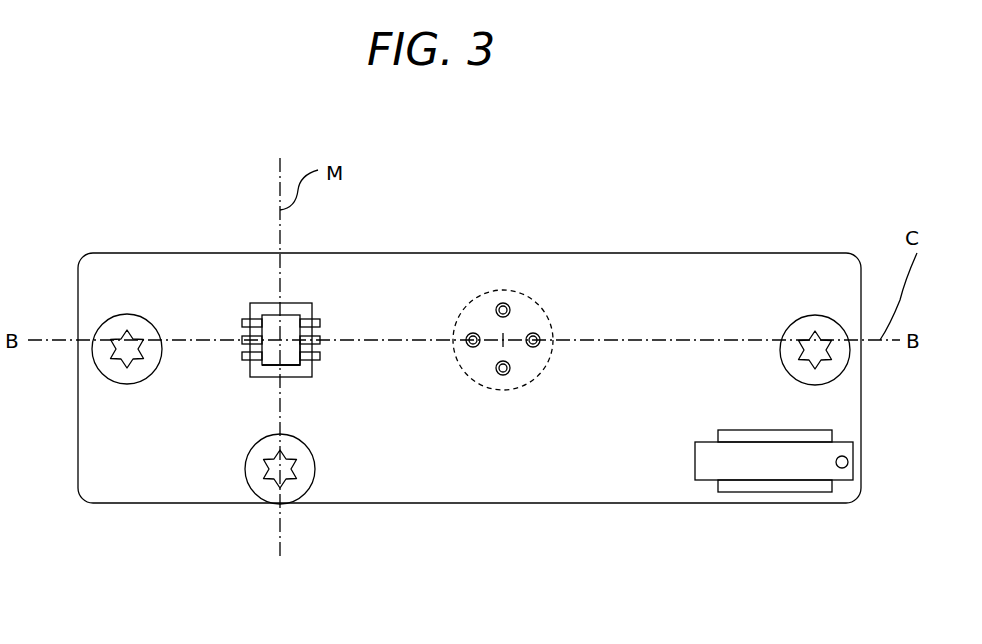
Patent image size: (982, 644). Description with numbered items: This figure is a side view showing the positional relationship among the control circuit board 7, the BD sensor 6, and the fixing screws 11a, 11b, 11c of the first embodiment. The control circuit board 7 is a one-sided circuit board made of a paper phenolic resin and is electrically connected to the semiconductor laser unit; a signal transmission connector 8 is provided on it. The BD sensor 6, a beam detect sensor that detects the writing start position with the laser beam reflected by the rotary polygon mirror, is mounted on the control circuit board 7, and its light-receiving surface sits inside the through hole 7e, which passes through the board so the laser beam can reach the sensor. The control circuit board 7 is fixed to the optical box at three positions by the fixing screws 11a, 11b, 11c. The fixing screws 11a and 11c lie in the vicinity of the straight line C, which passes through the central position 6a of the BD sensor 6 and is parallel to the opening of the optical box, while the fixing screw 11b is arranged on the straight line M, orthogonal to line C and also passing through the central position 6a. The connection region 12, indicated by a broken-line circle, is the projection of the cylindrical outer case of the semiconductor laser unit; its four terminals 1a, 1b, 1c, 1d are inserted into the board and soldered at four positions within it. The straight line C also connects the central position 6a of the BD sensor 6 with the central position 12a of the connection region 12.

The control circuit board 7 is at (612, 463).
The through hole 7e is at (260, 380).
The BD sensor 6 is at (273, 318).
The central position of the BD sensor 6a is at (283, 337).
The signal transmission connector 8 is at (773, 462).
The fixing screw 11a is at (128, 327).
The fixing screw 11b is at (257, 480).
The fixing screw 11c is at (815, 320).
The connection region 12 is at (530, 293).
The central position of the connection region 12a is at (507, 340).
The terminal 1a is at (500, 303).
The terminal 1b is at (470, 336).
The terminal 1c is at (503, 376).
The terminal 1d is at (536, 334).